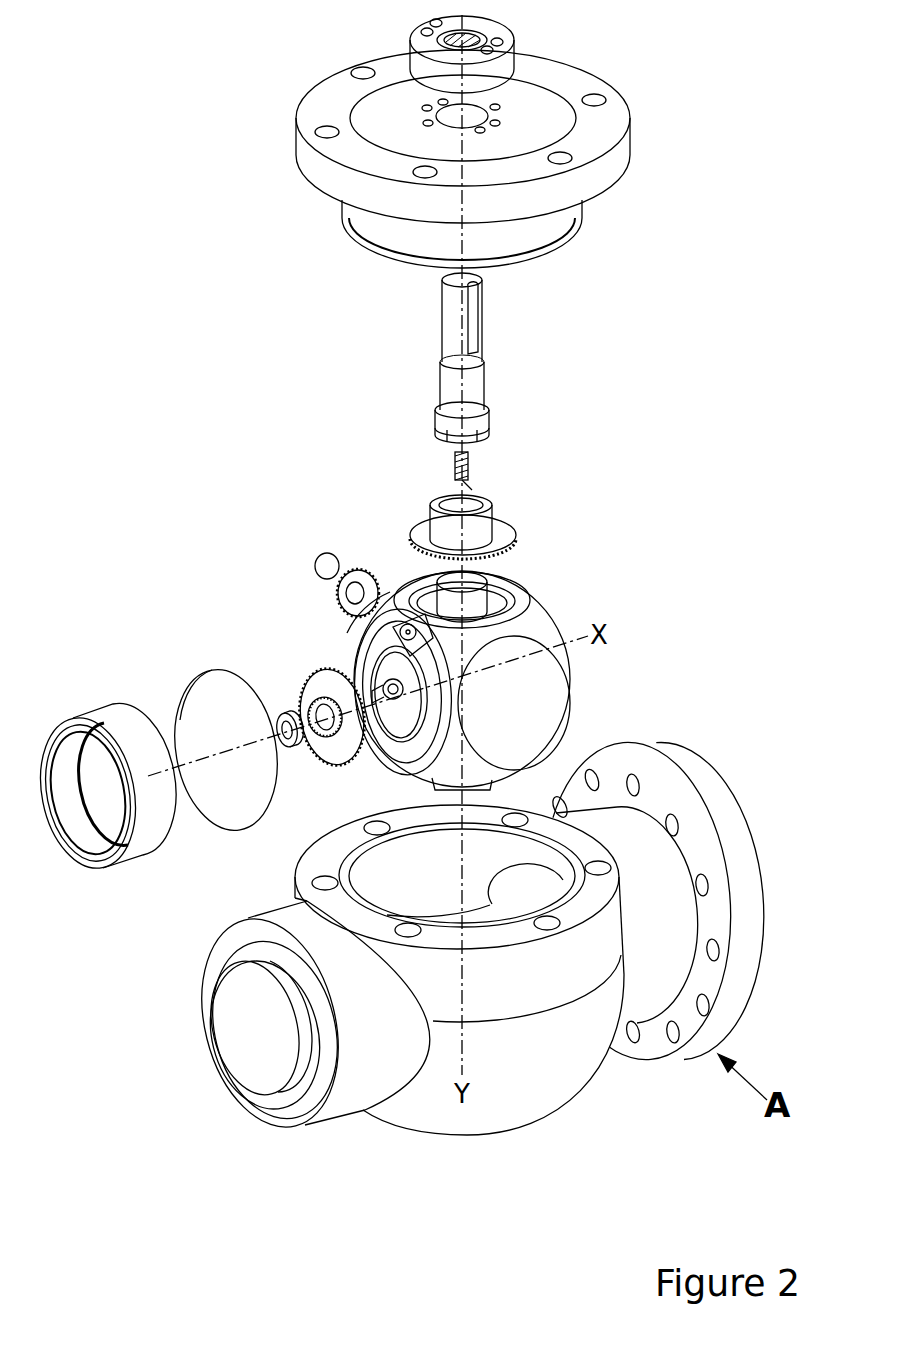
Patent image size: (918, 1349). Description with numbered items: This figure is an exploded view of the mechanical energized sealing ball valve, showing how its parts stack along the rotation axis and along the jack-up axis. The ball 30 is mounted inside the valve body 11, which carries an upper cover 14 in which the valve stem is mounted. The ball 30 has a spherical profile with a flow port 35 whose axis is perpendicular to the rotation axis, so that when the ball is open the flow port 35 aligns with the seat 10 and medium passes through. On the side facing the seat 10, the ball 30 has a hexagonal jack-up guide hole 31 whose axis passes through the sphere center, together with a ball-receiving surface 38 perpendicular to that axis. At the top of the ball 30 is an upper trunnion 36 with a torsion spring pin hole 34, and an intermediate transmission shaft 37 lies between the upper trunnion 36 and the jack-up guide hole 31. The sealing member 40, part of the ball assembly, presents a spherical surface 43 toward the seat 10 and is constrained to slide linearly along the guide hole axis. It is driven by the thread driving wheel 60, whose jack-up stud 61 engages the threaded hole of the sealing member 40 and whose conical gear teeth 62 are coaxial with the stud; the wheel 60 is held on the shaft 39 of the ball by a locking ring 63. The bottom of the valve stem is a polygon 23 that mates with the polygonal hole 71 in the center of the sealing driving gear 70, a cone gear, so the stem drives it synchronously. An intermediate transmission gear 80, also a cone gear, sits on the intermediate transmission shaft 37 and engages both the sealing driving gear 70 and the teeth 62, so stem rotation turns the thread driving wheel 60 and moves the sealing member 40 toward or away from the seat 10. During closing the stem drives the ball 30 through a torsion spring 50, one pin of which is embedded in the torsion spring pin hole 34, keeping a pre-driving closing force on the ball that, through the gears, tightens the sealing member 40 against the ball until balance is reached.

The seat 10 is at (113, 720).
The valve body 11 is at (590, 1048).
The upper cover 14 is at (312, 168).
The polygon 23 is at (435, 432).
The ball 30 is at (532, 625).
The jack-up guide hole 31 is at (372, 702).
The torsion spring pin hole 34 is at (470, 583).
The flow port 35 is at (522, 705).
The upper trunnion 36 is at (480, 600).
The intermediate transmission shaft 37 is at (405, 615).
The ball-receiving surface 38 is at (415, 760).
The shaft 39 is at (388, 683).
The sealing member 40 is at (190, 668).
The spherical surface 43 is at (183, 722).
The torsion spring 50 is at (470, 470).
The thread driving wheel 60 is at (340, 752).
The jack-up stud 61 is at (315, 712).
The gear teeth 62 is at (330, 678).
The locking ring 63 is at (290, 714).
The sealing driving gear 70 is at (515, 535).
The polygonal hole 71 is at (490, 503).
The intermediate transmission gear 80 is at (362, 572).